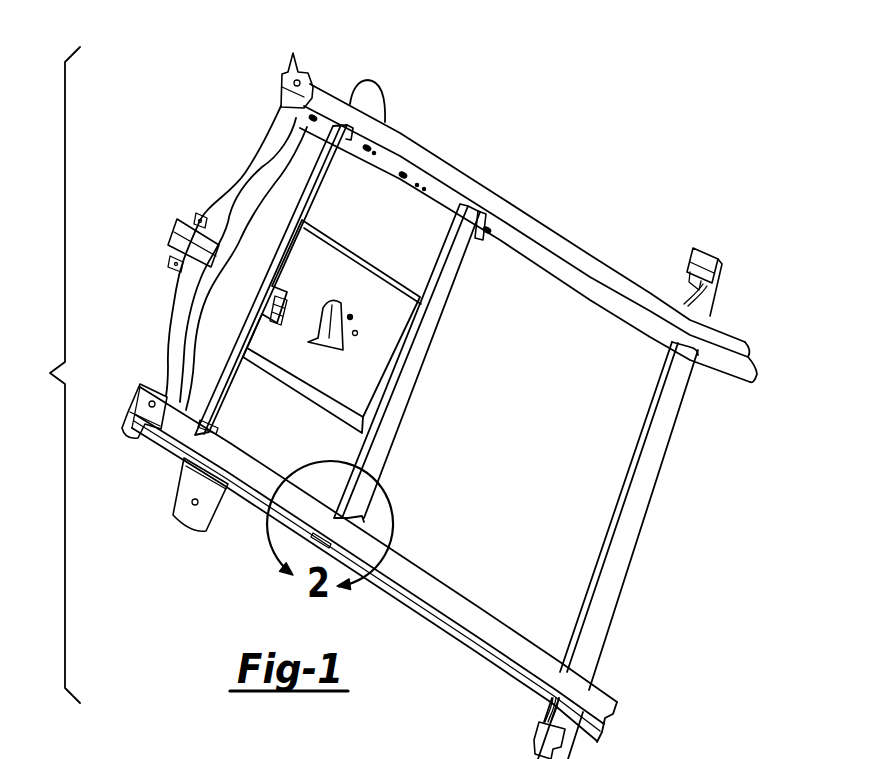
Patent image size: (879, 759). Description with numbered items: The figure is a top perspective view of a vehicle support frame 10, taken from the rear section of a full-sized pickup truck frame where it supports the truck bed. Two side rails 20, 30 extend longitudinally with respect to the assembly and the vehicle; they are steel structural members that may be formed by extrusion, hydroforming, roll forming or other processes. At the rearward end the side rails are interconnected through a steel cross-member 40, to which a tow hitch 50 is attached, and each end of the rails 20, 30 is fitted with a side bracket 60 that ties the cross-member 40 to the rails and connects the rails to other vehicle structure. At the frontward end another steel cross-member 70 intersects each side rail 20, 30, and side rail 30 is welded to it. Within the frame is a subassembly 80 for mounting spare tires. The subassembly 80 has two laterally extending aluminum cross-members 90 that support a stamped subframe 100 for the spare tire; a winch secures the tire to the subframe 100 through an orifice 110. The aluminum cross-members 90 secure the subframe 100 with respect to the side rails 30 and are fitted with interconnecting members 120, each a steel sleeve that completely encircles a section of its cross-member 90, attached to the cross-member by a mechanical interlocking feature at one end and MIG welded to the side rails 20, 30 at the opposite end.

The vehicle support frame 10 is at (53, 375).
The side rail 20 is at (246, 497).
The side rail 30 is at (534, 232).
The cross-member 40 is at (262, 163).
The tow hitch 50 is at (175, 225).
The side bracket 60 is at (284, 74).
The cross-member 70 is at (643, 523).
The subassembly 80 is at (412, 390).
The cross-member 90 is at (345, 162).
The subframe 100 is at (371, 386).
The orifice 110 is at (327, 314).
The interconnecting member 120 is at (450, 203).